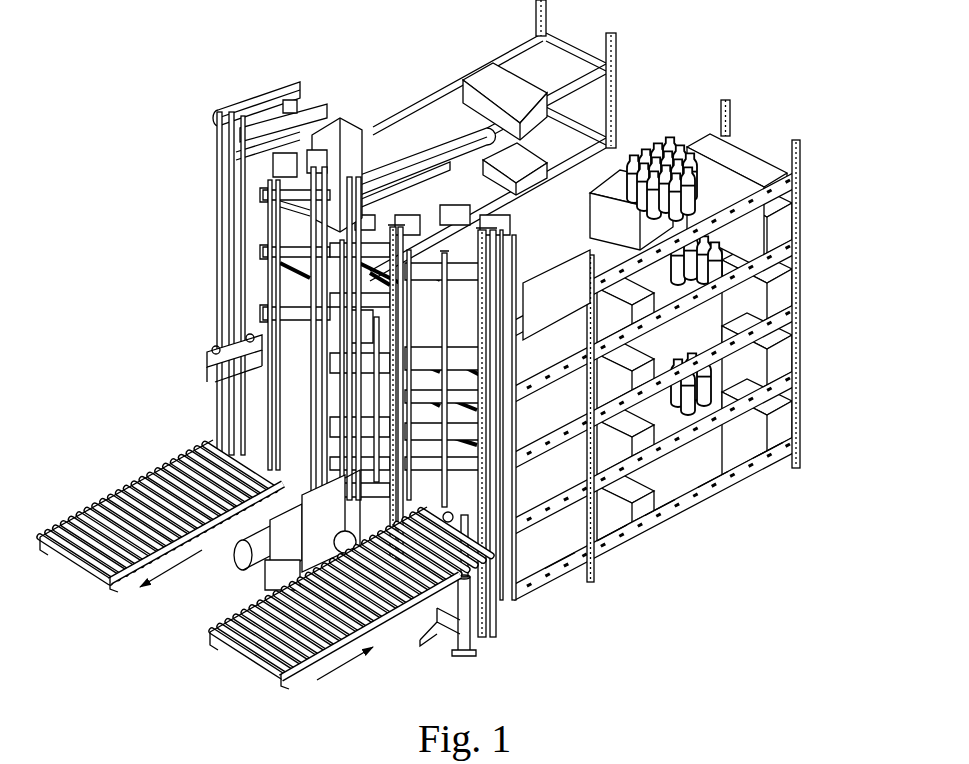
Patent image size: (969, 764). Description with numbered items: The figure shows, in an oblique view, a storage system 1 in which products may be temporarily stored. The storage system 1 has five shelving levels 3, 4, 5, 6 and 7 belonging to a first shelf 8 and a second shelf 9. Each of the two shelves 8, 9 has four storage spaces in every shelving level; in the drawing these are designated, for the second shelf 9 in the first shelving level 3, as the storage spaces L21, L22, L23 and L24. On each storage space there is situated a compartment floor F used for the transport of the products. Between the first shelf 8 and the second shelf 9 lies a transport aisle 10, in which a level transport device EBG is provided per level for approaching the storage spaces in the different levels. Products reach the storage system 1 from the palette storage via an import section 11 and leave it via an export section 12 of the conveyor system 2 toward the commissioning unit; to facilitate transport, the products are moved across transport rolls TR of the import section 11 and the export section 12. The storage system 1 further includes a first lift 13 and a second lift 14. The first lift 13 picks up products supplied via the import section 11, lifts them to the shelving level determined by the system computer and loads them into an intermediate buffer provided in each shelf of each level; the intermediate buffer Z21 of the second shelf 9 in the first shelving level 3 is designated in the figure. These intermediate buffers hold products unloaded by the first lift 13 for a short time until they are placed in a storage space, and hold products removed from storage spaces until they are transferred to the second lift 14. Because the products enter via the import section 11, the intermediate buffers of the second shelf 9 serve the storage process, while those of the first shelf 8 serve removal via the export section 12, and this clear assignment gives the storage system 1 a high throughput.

The storage system 1 is at (130, 69).
The conveyor system 2 is at (88, 423).
The shelving level 3 is at (800, 440).
The shelving level 4 is at (800, 375).
The shelving level 5 is at (800, 310).
The shelving level 6 is at (800, 245).
The shelving level 7 is at (800, 180).
The first shelf 8 is at (623, 33).
The second shelf 9 is at (770, 132).
The transport aisle 10 is at (703, 75).
The import section 11 is at (208, 647).
The export section 12 is at (110, 590).
The first lift 13 is at (480, 577).
The second lift 14 is at (205, 375).
The compartment floor F is at (760, 165).
The level transport device EBG is at (377, 233).
The transport rolls TR is at (357, 613).
The intermediate buffer Z21 is at (560, 568).
The storage space L21 is at (612, 530).
The storage space L22 is at (660, 505).
The storage space L23 is at (713, 475).
The storage space L24 is at (768, 445).